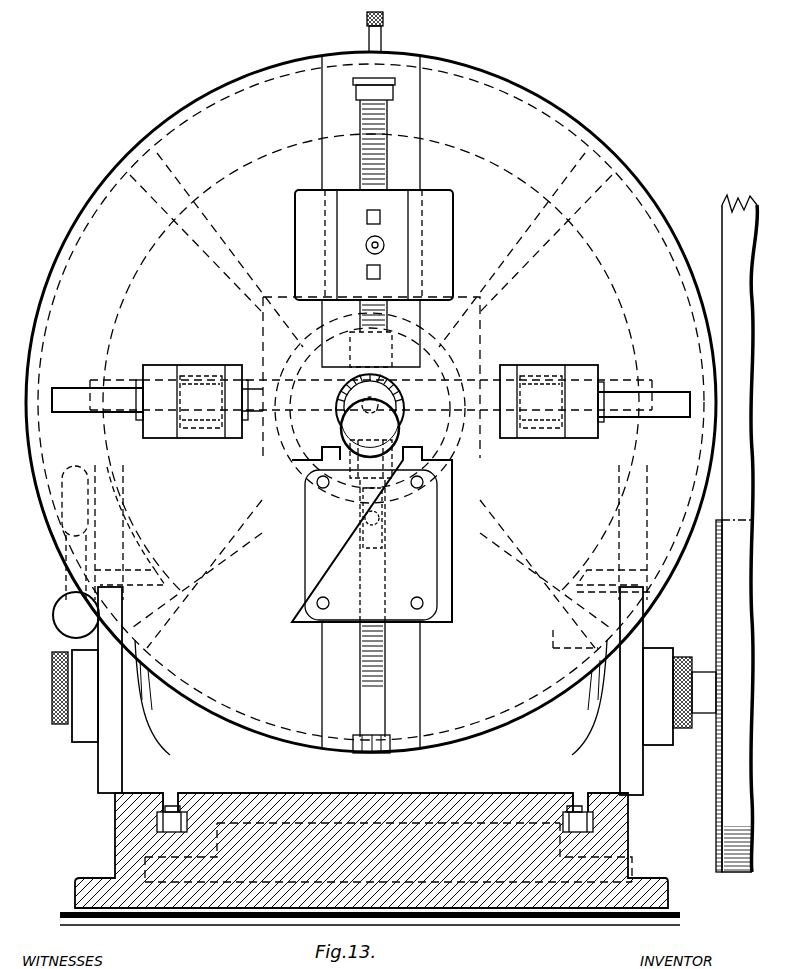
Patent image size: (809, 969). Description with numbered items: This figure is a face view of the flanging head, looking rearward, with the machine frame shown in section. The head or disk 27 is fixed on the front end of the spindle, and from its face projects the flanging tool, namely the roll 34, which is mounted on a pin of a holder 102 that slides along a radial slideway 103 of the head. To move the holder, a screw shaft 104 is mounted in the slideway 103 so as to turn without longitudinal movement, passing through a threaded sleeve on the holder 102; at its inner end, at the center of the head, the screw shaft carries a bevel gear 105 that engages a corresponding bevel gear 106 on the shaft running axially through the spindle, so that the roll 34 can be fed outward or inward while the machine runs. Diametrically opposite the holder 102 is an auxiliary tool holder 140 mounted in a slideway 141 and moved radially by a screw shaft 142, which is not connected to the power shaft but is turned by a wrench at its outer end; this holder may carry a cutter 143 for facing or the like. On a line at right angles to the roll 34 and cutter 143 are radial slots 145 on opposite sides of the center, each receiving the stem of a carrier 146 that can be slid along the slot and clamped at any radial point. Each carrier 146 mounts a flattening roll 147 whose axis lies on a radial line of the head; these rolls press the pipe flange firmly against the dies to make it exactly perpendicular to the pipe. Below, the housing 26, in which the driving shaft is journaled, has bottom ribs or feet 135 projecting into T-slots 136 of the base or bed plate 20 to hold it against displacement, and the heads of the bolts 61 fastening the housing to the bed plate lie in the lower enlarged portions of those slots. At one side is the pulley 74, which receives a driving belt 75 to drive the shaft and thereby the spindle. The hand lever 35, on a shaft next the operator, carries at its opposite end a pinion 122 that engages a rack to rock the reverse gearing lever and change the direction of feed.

The base or bed plate 20 is at (115, 831).
The housing 26 is at (125, 295).
The head or disk 27 is at (165, 122).
The flanging tool or roll 34 is at (344, 428).
The hand lever 35 is at (62, 577).
The bolts 61 is at (160, 828).
The pulley 74 is at (718, 606).
The driving belt 75 is at (722, 222).
The holder 102 is at (297, 565).
The radial slideway 103 is at (327, 660).
The screw shaft 104 is at (386, 672).
The bevel gear 105 is at (403, 420).
The bevel gear 106 is at (404, 386).
The pinion 122 is at (53, 620).
The bottom ribs or feet 135 is at (170, 803).
The T-slots 136 is at (175, 832).
The tool holder 140 is at (437, 226).
The slideway 141 is at (425, 118).
The screw shaft 142 is at (368, 108).
The cutter 143 is at (372, 249).
The slots 145 is at (67, 388).
The carrier 146 is at (162, 365).
The flattening roll 147 is at (191, 430).